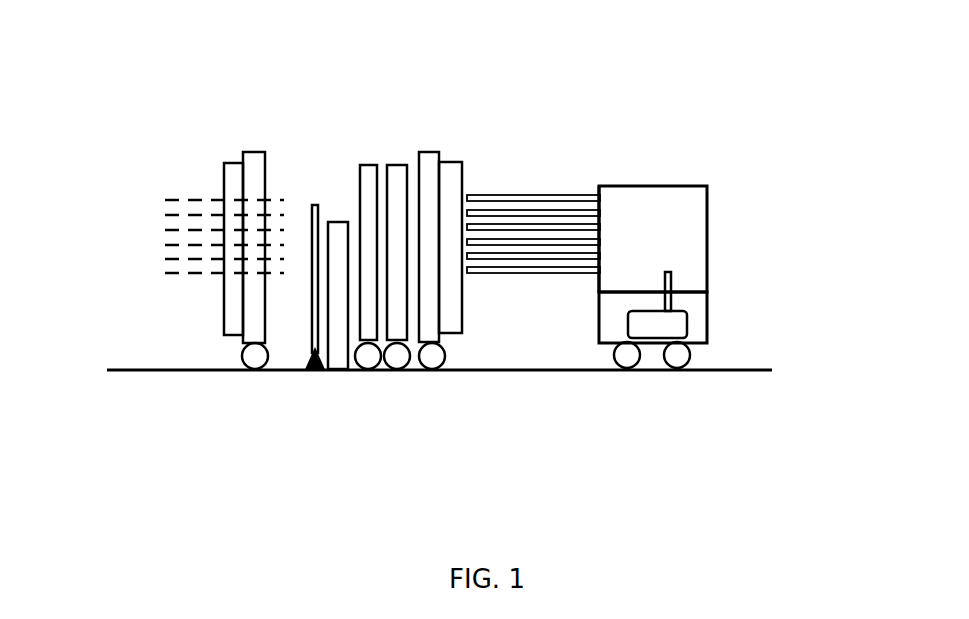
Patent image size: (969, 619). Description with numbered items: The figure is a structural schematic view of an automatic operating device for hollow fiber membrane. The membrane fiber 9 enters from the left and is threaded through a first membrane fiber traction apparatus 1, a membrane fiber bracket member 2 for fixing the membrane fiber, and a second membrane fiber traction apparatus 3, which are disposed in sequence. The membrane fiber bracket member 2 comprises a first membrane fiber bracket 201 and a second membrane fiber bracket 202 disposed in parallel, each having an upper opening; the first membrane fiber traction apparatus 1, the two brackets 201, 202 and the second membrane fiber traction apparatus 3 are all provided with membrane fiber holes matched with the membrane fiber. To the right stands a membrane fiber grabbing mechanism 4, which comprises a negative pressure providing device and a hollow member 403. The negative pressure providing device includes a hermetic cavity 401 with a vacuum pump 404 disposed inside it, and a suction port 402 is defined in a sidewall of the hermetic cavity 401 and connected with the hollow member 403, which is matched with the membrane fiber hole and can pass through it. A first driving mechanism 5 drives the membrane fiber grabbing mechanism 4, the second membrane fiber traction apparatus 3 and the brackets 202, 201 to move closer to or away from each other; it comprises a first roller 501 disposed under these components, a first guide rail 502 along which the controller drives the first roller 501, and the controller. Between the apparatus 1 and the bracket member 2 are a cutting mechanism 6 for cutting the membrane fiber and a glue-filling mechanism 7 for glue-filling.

The first membrane fiber traction apparatus 1 is at (255, 175).
The membrane fiber bracket member 2 is at (416, 269).
The first membrane fiber bracket 201 is at (366, 187).
The second membrane fiber bracket 202 is at (392, 187).
The second membrane fiber traction apparatus 3 is at (449, 180).
The membrane fiber grabbing mechanism 4 is at (654, 274).
The hermetic cavity 401 is at (710, 217).
The suction port 402 is at (600, 203).
The hollow member 403 is at (498, 198).
The vacuum pump 404 is at (678, 323).
The first driving mechanism 5 is at (720, 384).
The first roller 501 is at (677, 365).
The first guide rail 502 is at (593, 372).
The cutting mechanism 6 is at (315, 342).
The glue-filling mechanism 7 is at (332, 342).
The membrane fiber 9 is at (177, 197).